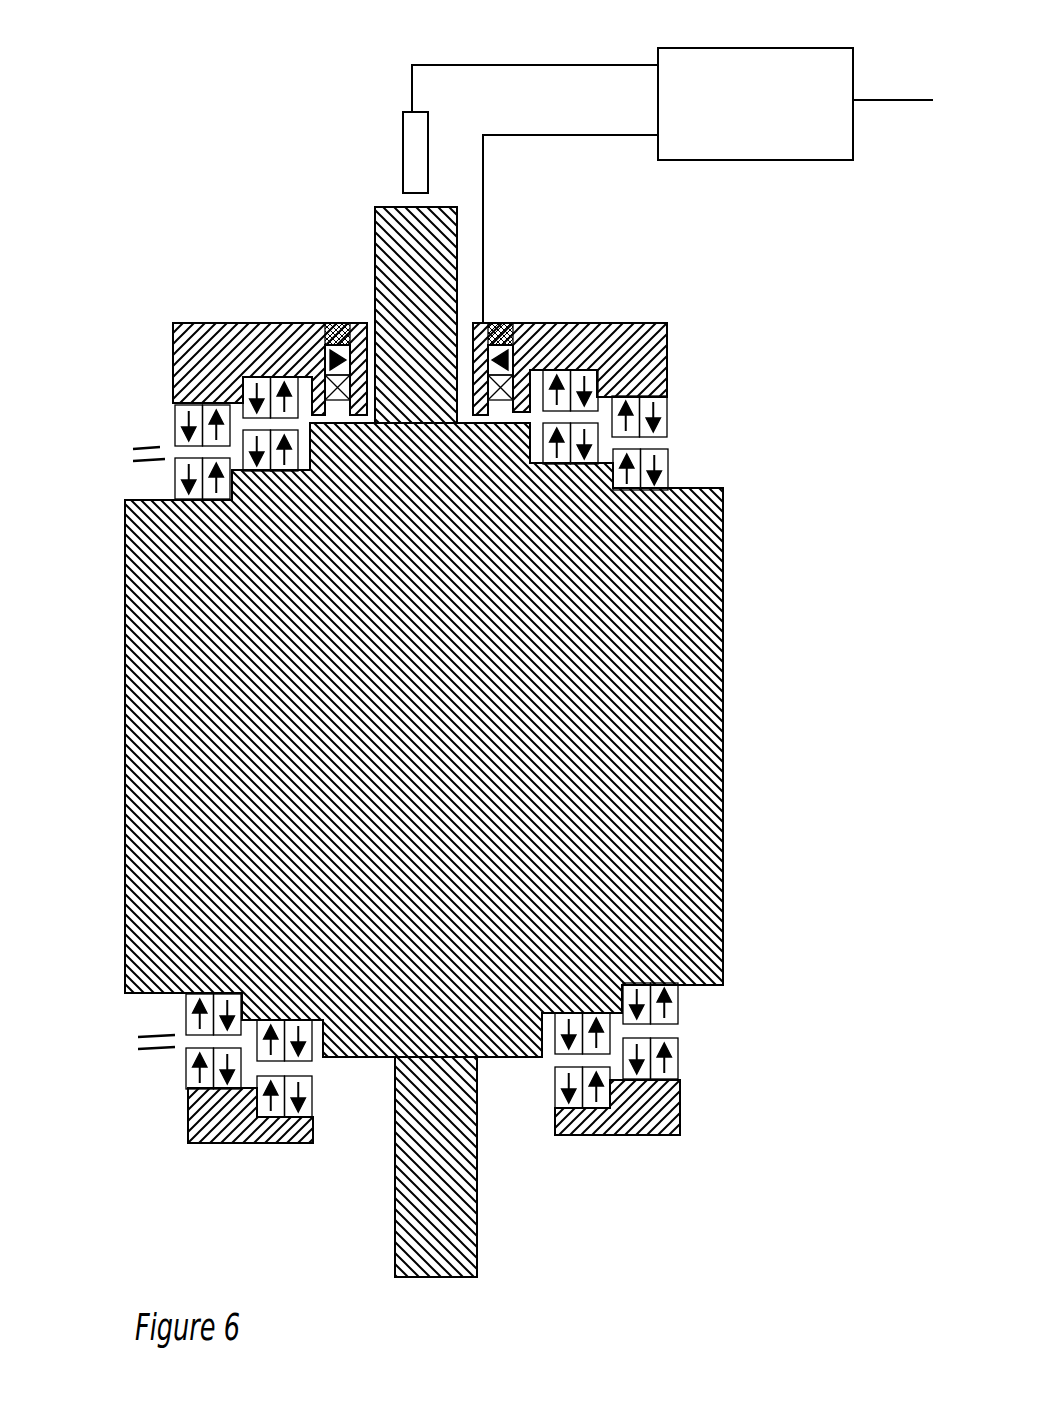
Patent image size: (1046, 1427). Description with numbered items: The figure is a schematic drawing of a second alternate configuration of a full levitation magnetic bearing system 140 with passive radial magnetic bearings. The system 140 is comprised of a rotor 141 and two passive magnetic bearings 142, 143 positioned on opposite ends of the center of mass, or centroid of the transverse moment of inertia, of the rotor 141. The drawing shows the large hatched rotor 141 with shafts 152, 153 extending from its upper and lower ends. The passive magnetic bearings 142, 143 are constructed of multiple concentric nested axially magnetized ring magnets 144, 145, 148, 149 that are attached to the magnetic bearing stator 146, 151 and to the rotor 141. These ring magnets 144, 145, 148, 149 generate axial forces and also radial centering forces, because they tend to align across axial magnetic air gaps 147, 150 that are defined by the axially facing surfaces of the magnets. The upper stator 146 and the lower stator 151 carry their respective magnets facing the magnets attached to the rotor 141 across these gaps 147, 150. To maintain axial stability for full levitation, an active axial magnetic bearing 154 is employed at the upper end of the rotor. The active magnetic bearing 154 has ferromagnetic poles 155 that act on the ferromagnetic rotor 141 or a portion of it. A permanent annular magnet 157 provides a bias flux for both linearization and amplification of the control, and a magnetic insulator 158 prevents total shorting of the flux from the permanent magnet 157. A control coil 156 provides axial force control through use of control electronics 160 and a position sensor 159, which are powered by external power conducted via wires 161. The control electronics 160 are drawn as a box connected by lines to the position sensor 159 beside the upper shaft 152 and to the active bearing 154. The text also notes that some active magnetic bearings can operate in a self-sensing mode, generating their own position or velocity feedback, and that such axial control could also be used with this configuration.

The full levitation magnetic bearing system 140 is at (137, 128).
The rotor 141 is at (125, 648).
The passive magnetic bearing 142 is at (156, 430).
The passive magnetic bearing 143 is at (165, 1070).
The axially magnetized ring magnet 144 is at (172, 412).
The axially magnetized ring magnet 145 is at (172, 486).
The magnetic bearing stator 146 is at (210, 323).
The axial magnetic air gap 147 is at (118, 456).
The axially magnetized ring magnet 148 is at (185, 1013).
The axially magnetized ring magnet 149 is at (190, 1085).
The lower air gap 150 is at (124, 1046).
The magnetic bearing stator 151 is at (283, 1143).
The upper shaft 152 is at (458, 228).
The lower shaft 153 is at (477, 1240).
The active axial magnetic bearing 154 is at (513, 305).
The ferromagnetic poles 155 is at (541, 405).
The control coil 156 is at (352, 386).
The permanent annular magnet 157 is at (334, 350).
The magnetic insulator 158 is at (495, 323).
The position sensor 159 is at (403, 138).
The control electronics 160 is at (757, 48).
The wires 161 is at (933, 100).